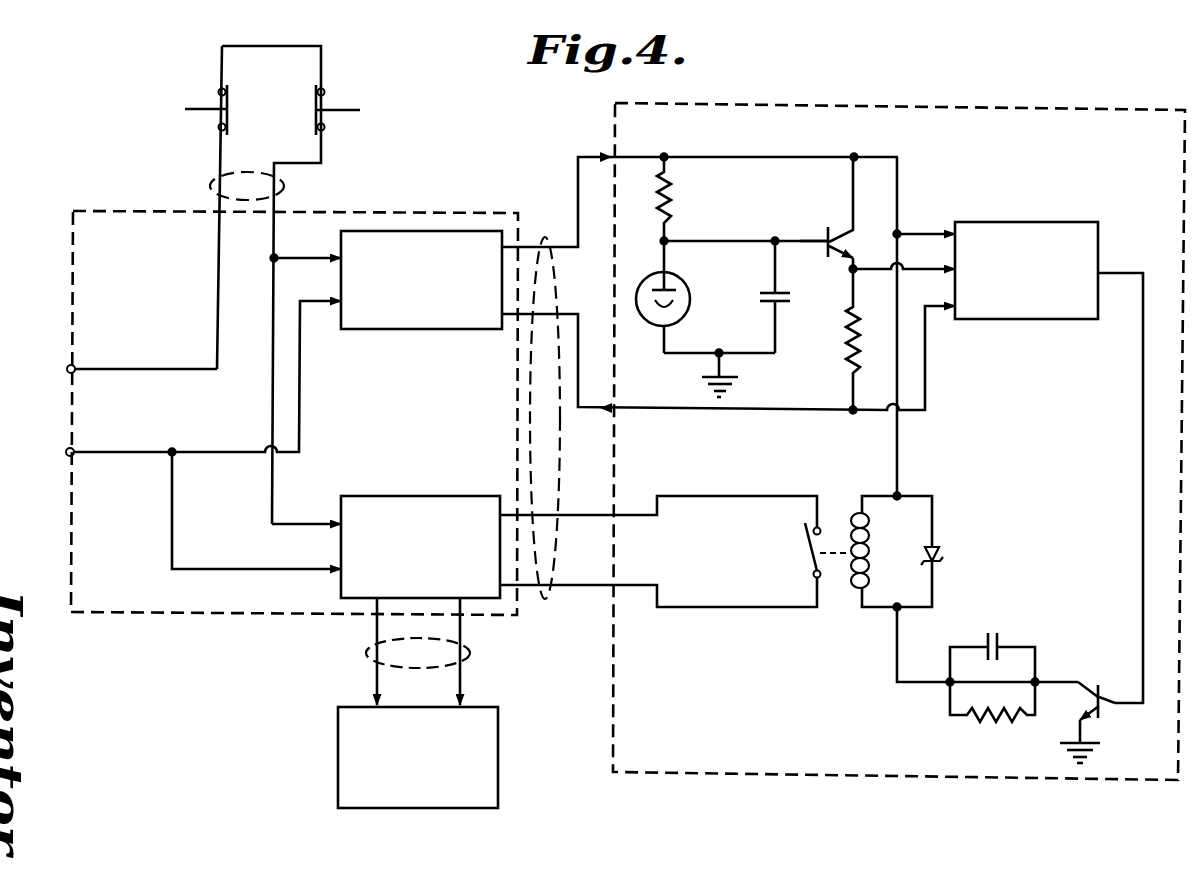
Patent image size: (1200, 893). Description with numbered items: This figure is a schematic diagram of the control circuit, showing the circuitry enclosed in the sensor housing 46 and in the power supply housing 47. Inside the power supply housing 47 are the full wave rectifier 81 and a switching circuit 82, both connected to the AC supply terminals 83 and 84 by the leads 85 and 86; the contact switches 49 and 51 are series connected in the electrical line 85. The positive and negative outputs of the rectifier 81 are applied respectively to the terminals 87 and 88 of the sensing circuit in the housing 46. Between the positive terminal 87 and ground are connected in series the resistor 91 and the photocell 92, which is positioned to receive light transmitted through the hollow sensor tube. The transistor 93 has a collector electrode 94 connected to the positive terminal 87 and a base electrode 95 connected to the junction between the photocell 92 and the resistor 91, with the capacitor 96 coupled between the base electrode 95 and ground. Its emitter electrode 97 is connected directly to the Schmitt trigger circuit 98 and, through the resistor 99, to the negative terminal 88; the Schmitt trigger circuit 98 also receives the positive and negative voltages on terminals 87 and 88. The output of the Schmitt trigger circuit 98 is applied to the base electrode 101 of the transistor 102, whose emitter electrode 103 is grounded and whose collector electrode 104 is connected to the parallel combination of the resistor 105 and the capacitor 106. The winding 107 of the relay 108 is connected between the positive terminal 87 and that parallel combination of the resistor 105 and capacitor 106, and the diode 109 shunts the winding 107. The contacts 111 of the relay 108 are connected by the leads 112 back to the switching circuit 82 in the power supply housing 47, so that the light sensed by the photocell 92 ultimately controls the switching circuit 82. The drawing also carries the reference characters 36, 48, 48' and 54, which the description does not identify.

The reversible motor 36 is at (338, 762).
The sensor housing 46 is at (710, 775).
The power supply housing 47 is at (453, 211).
The cable 48 is at (555, 437).
The cable 48' is at (241, 285).
The contact switch 49 is at (196, 108).
The contact switch 51 is at (343, 110).
The motor cable 54 is at (470, 652).
The full wave rectifier 81 is at (380, 229).
The switching circuit 82 is at (372, 496).
The AC supply terminal 83 is at (67, 368).
The AC supply terminal 84 is at (66, 452).
The lead 85 is at (275, 228).
The lead 86 is at (118, 458).
The positive terminal 87 is at (608, 154).
The negative terminal 88 is at (615, 410).
The resistor 91 is at (673, 204).
The photocell 92 is at (687, 290).
The transistor 93 is at (855, 223).
The collector electrode 94 is at (848, 240).
The base electrode 95 is at (826, 237).
The capacitor 96 is at (758, 297).
The emitter electrode 97 is at (838, 253).
The Schmitt trigger circuit 98 is at (1032, 222).
The resistor 99 is at (846, 342).
The base electrode 101 is at (1085, 700).
The transistor 102 is at (1106, 718).
The emitter electrode 103 is at (1056, 734).
The collector electrode 104 is at (1088, 682).
The resistor 105 is at (977, 722).
The capacitor 106 is at (990, 633).
The winding 107 is at (871, 556).
The relay 108 is at (751, 571).
The diode 109 is at (945, 556).
The contacts 111 is at (803, 539).
The leads 112 is at (637, 517).